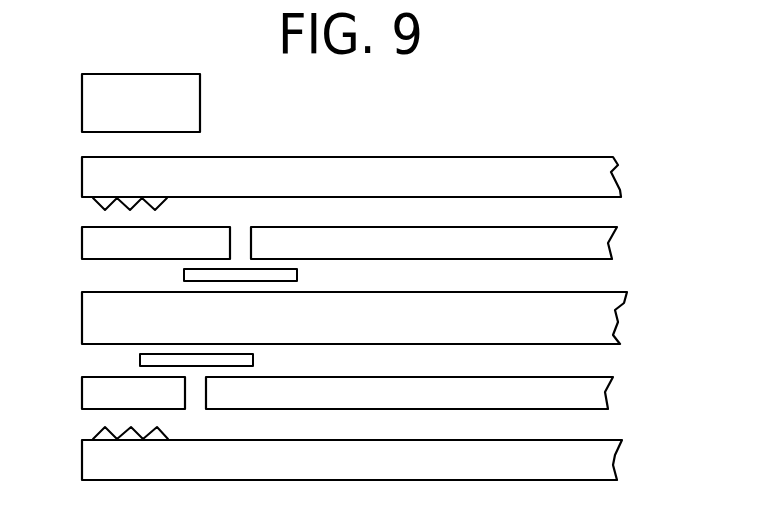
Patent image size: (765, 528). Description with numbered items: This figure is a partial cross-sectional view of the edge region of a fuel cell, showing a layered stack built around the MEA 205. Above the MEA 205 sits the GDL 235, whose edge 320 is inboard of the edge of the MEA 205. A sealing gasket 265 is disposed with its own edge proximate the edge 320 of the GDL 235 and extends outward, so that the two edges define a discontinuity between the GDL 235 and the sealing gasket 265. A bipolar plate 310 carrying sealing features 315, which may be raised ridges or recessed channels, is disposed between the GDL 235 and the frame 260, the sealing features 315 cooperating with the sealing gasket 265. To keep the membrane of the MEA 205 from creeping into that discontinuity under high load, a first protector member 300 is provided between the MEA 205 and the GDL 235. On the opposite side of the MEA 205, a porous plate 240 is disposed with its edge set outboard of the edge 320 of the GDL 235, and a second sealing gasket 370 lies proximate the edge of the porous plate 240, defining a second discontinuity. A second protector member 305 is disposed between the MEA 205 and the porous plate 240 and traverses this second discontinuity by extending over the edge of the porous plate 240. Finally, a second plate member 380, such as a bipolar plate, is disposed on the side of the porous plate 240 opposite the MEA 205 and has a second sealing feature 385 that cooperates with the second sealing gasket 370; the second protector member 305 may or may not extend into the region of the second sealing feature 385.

The frame 260 is at (151, 116).
The bipolar plate 310 is at (590, 177).
The sealing features 315 is at (97, 200).
The edge of GDL 320 is at (251, 243).
The sealing gasket 265 is at (96, 243).
The GDL 235 is at (598, 247).
The first protector member 300 is at (184, 275).
The MEA 205 is at (598, 322).
The second protector member 305 is at (140, 359).
The second sealing gasket 370 is at (96, 393).
The porous plate 240 is at (597, 393).
The second sealing feature 385 is at (97, 436).
The second plate member 380 is at (590, 461).